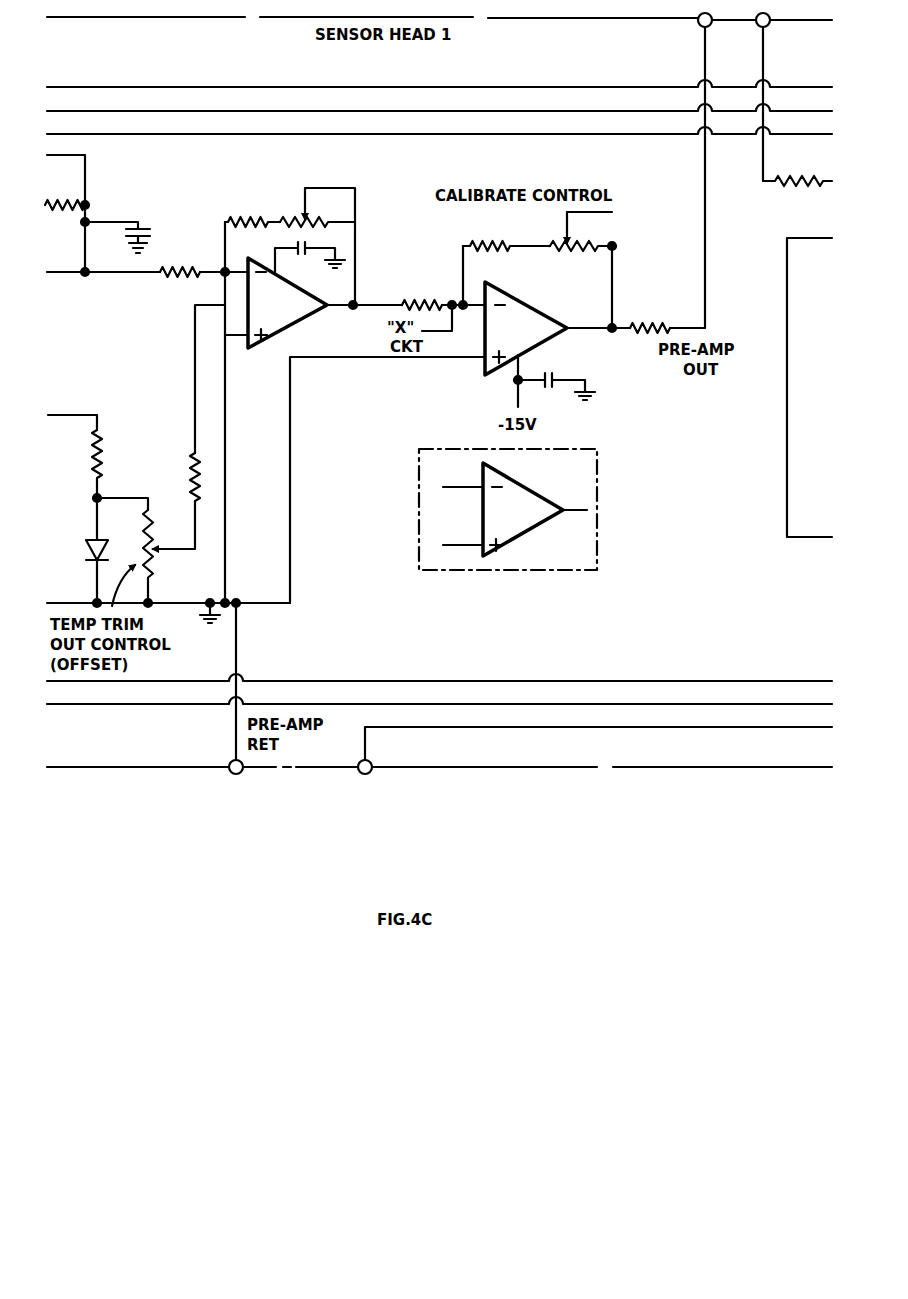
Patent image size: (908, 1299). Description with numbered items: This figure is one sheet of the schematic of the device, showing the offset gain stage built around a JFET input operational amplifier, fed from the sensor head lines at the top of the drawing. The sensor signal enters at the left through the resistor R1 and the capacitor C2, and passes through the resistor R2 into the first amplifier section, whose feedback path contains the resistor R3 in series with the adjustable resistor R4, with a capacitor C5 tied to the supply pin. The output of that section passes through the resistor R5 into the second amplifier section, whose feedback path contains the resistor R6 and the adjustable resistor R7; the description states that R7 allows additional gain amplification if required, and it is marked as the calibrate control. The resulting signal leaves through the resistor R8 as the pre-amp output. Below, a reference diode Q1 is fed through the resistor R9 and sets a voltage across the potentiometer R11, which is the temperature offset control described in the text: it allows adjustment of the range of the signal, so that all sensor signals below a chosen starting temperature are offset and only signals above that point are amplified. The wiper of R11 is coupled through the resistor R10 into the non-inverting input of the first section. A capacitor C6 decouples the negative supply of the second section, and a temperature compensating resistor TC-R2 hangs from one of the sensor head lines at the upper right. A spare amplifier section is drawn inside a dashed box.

The resistor R1 is at (65, 192).
The resistor R2 is at (180, 260).
The resistor R3 is at (252, 210).
The potentiometer R4 is at (317, 246).
The resistor R5 is at (422, 292).
The resistor R6 is at (506, 233).
The calibration gain control R7 is at (581, 270).
The resistor R8 is at (650, 315).
The resistor R9 is at (113, 485).
The resistor R10 is at (175, 501).
The temperature offset control R11 is at (152, 558).
The capacitor C2 is at (129, 228).
The capacitor C5 is at (310, 250).
The capacitor C6 is at (554, 381).
The reference diode Q1 LM329 Q1 is at (79, 547).
The temperature compensation resistor TC-R2 is at (797, 169).